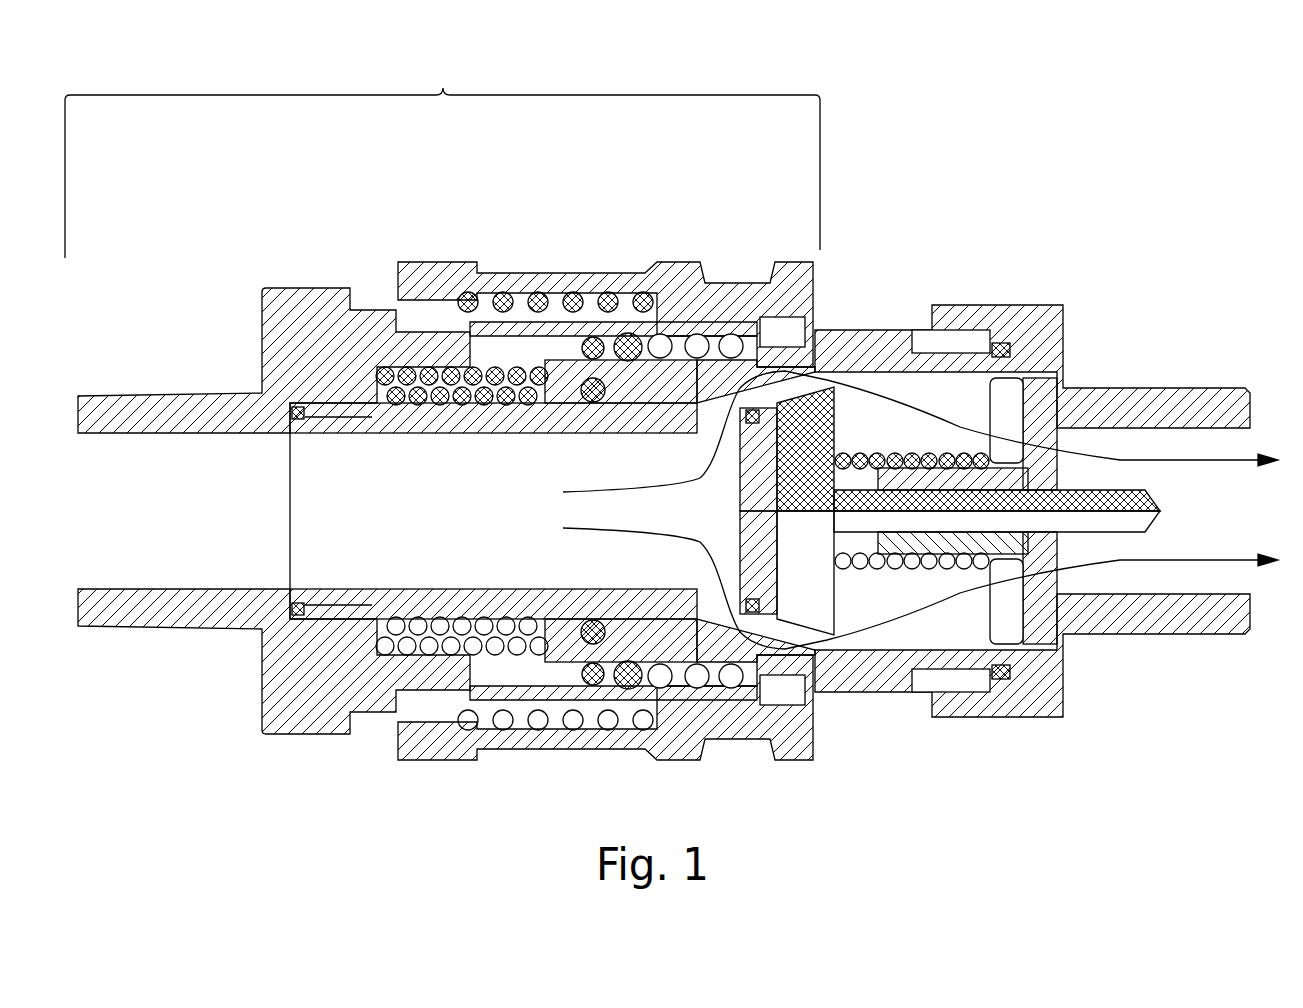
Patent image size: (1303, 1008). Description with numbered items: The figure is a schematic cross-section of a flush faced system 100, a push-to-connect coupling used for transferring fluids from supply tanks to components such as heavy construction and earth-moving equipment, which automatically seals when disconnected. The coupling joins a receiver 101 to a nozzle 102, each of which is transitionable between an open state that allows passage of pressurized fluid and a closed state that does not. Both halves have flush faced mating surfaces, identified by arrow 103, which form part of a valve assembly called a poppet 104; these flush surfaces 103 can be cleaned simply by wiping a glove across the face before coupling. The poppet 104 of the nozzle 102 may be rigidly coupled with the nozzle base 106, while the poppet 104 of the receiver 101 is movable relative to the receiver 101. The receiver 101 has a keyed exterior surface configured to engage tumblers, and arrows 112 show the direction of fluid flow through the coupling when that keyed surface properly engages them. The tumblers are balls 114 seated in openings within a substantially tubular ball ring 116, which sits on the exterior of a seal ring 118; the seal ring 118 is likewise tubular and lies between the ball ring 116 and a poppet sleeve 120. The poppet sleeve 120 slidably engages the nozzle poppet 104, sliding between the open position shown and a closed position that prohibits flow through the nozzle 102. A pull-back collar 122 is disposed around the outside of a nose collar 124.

The flush faced system 100 is at (907, 112).
The receiver 101 is at (1000, 305).
The nozzle 102 is at (442, 153).
The flush surfaces 103 is at (782, 440).
The poppet 104 is at (757, 462).
The nozzle base 106 is at (182, 640).
The arrows 112 is at (1190, 464).
The balls 114 is at (630, 338).
The ball ring 116 is at (683, 340).
The seal ring 118 is at (550, 628).
The poppet sleeve 120 is at (660, 406).
The pull-back collar 122 is at (640, 286).
The nose collar 124 is at (553, 328).